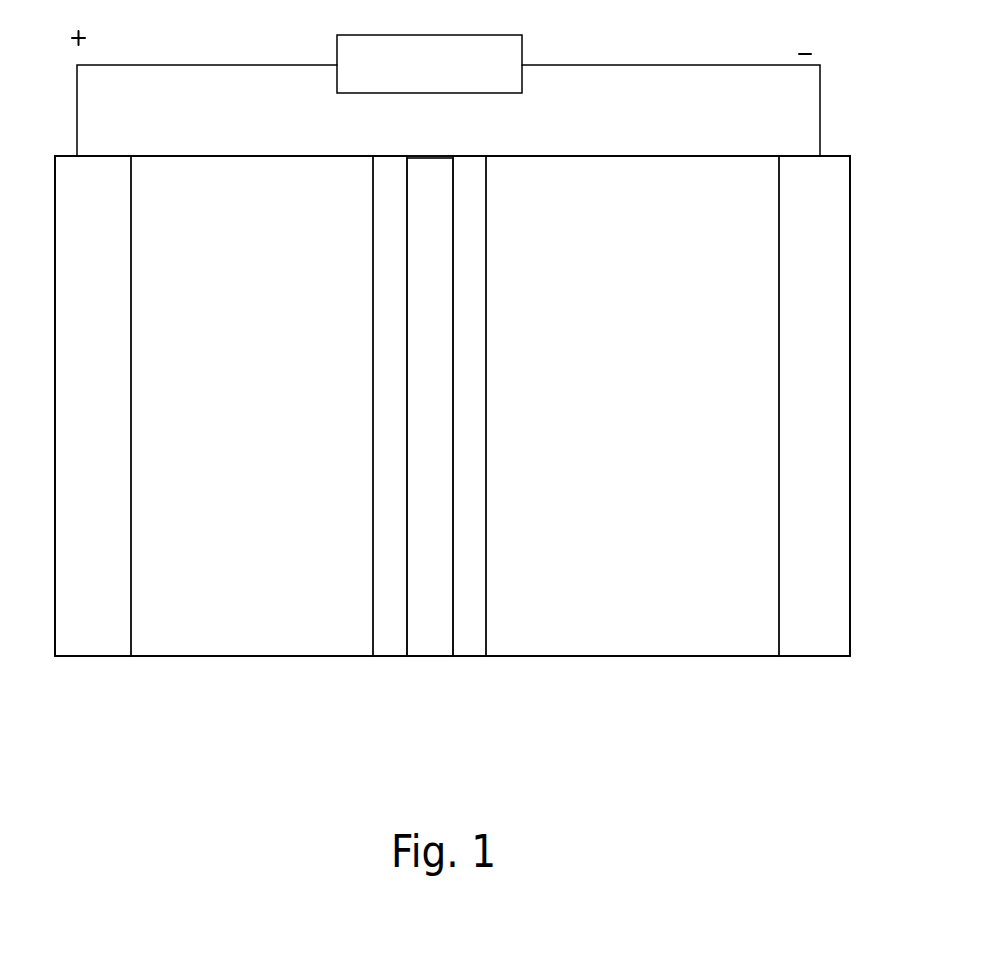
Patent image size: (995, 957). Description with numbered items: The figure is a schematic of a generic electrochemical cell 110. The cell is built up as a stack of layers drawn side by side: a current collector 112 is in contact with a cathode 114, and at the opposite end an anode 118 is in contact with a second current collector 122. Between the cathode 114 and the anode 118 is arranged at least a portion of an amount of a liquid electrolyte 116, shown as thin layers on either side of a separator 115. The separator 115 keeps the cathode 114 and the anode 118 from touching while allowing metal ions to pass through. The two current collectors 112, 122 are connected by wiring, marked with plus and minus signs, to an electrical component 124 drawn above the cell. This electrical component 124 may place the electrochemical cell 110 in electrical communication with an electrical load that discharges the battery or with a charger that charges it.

The electrochemical cell 110 is at (190, 697).
The current collector 112 is at (93, 623).
The cathode 114 is at (258, 625).
The separator 115 is at (430, 205).
The liquid electrolyte 116 is at (382, 637).
The anode 118 is at (627, 632).
The current collector 122 is at (819, 628).
The electrical component 124 is at (495, 70).